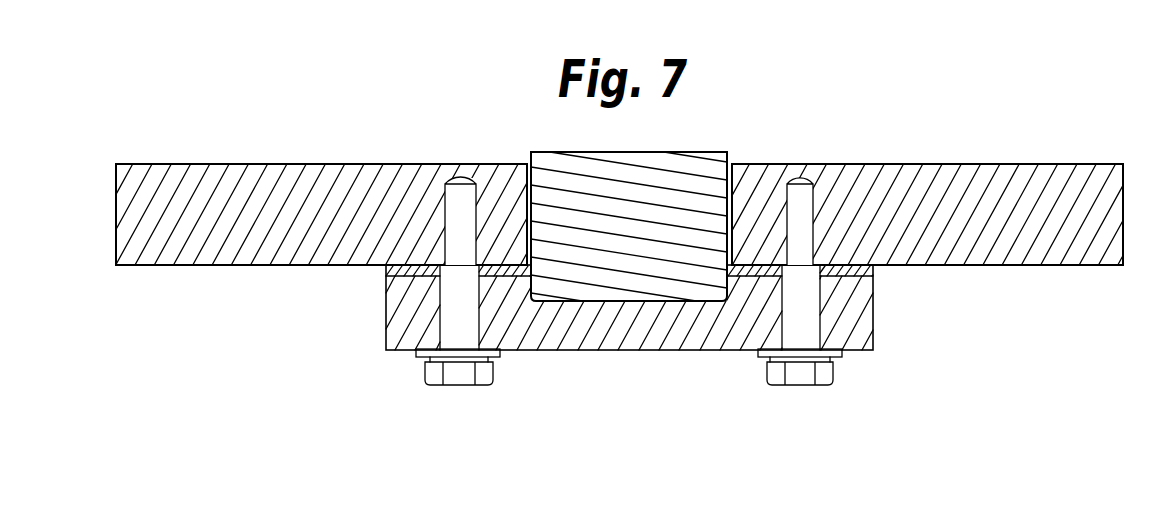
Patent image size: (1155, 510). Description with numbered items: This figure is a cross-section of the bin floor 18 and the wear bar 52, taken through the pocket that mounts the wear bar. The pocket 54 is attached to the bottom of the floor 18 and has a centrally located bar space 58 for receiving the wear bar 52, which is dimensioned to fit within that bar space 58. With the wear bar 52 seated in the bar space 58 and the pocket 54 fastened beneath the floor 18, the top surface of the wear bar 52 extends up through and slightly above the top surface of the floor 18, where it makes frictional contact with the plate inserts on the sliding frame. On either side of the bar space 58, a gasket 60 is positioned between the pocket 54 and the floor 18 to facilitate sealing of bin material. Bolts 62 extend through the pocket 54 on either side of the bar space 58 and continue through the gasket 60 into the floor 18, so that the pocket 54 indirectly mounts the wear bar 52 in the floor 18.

The floor 18 is at (1067, 172).
The wear bar 52 is at (690, 162).
The pocket 54 is at (587, 349).
The bar space 58 is at (732, 288).
The gasket 60 is at (873, 272).
The bolts 62 is at (803, 375).